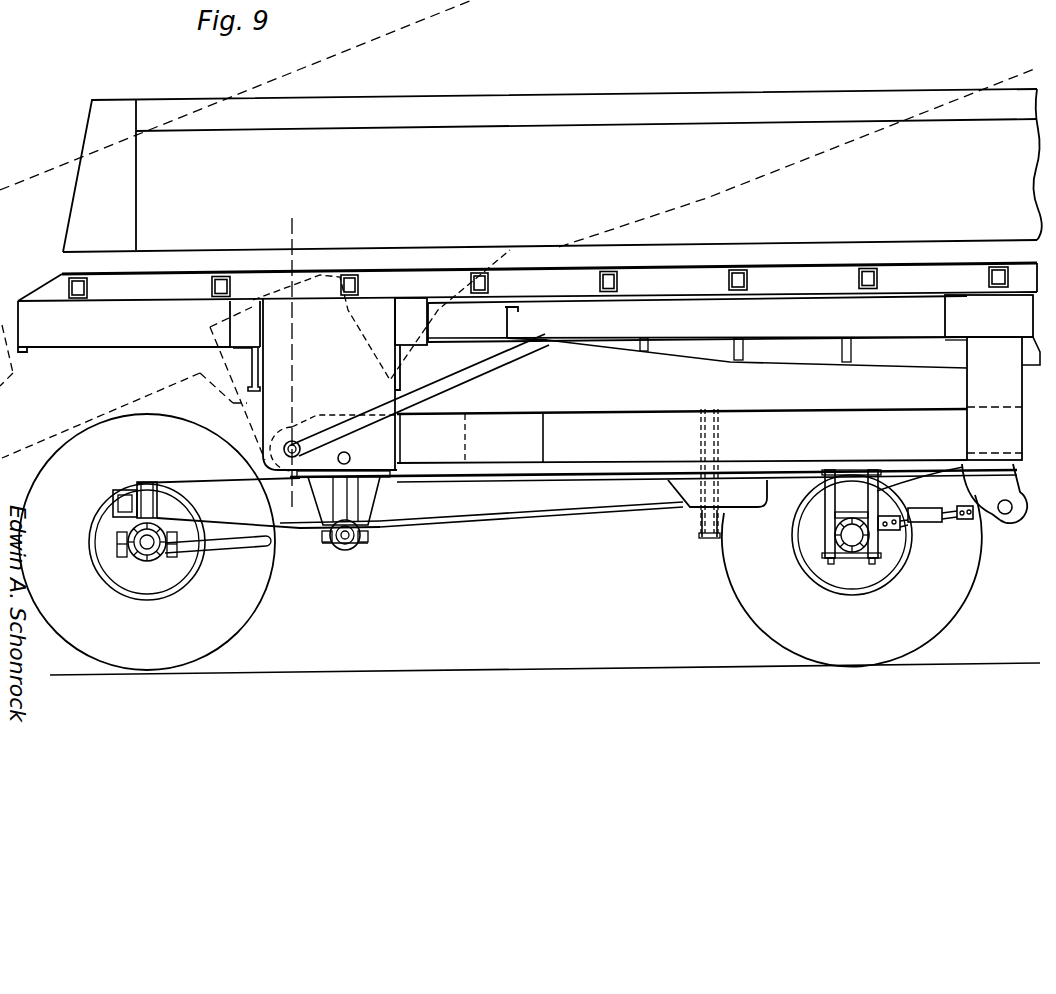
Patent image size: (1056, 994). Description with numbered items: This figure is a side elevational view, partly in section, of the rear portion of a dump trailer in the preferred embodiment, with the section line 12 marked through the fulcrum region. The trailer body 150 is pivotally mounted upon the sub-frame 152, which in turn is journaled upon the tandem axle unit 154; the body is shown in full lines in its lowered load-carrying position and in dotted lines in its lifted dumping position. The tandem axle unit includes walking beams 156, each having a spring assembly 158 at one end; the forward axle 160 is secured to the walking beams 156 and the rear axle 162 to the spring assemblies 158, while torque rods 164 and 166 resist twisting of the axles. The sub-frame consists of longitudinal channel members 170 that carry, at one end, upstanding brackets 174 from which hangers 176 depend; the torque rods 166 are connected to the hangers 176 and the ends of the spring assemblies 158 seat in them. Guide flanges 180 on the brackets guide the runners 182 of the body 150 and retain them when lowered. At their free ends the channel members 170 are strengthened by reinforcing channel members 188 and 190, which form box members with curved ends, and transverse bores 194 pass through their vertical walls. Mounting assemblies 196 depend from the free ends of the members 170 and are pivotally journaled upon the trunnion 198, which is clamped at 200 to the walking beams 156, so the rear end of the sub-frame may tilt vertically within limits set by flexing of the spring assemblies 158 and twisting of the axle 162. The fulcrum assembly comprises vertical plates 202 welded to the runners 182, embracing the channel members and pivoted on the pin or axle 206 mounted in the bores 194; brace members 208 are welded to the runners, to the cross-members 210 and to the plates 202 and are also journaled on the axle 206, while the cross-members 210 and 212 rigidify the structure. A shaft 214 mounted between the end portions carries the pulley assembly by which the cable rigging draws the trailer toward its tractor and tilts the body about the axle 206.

The section line 12- 12 is at (318, 282).
The trailer body 150 is at (352, 58).
The sub-frame 152 is at (645, 409).
The tandem axle unit 154 is at (593, 521).
The walking beams 156 is at (435, 516).
The spring assembly 158 is at (797, 495).
The tandem axle 160 is at (148, 561).
The tandem axle 162 is at (850, 552).
The torque rod 164 is at (243, 551).
The torque rod 166 is at (932, 524).
The longitudinal channel member 170 is at (837, 417).
The upstanding bracket 174 is at (967, 425).
The hanger 176 is at (996, 516).
The upstanding guide flange 180 is at (952, 311).
The runner 182 is at (720, 297).
The reinforcing channel member 188 is at (530, 408).
The reinforcing channel member 190 is at (397, 457).
The transverse bore 194 is at (248, 352).
The mounting assembly 196 is at (360, 515).
The trunnion 198 is at (338, 550).
The clamp 200 is at (352, 545).
The vertical plate 202 is at (381, 363).
The pin or axle 206 is at (296, 440).
The brace member 208 is at (488, 362).
The cross-member 210 is at (393, 372).
The cross-member 212 is at (232, 398).
The shaft 214 is at (350, 456).